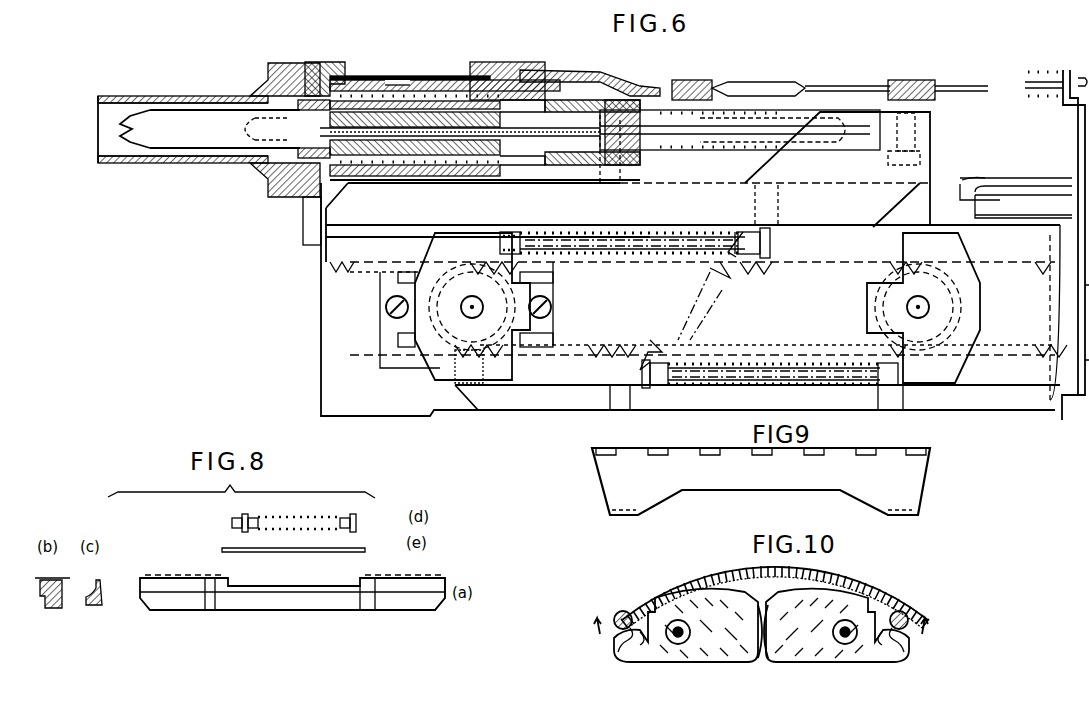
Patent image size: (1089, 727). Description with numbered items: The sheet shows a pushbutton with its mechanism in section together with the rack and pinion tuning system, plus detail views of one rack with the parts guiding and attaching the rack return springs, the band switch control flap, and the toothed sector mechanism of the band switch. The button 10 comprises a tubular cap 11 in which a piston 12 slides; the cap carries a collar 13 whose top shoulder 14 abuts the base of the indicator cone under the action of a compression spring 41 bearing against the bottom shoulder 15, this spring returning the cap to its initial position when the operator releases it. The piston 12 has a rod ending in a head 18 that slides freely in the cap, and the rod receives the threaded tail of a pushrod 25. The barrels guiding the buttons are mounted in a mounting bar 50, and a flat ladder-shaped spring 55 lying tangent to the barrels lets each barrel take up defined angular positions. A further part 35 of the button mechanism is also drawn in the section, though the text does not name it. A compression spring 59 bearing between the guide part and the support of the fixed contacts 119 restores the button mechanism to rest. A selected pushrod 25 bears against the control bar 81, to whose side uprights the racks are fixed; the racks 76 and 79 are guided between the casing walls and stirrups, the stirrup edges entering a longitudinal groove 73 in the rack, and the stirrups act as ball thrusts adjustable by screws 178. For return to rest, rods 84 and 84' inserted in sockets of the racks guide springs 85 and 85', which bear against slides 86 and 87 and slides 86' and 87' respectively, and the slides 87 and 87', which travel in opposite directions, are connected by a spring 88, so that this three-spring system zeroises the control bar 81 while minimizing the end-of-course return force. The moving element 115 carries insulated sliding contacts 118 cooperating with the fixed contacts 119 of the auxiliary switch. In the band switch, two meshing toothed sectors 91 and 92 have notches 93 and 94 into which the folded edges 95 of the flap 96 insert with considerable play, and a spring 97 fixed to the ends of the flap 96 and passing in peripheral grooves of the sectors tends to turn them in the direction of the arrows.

In FIG. 6, the button 10 is at (192, 104).
In FIG. 6, the tubular cap 11 is at (125, 163).
In FIG. 6, the piston 12 is at (190, 148).
In FIG. 6, the collar 13 is at (318, 80).
In FIG. 6, the top shoulder 14 is at (262, 176).
In FIG. 6, the bottom shoulder 15 is at (289, 190).
In FIG. 6, the head 18 is at (98, 132).
In FIG. 6, the pushrod 25 is at (790, 126).
In FIG. 6, the lever block 35 is at (556, 70).
In FIG. 6, the compression spring 41 is at (402, 162).
In FIG. 6, the mounting bar 50 is at (290, 66).
In FIG. 6, the spring 55 is at (398, 78).
In FIG. 6, the spring 59 is at (742, 112).
In FIG. 6, the rack 76 is at (832, 262).
In FIG. 6, the rack 79 is at (590, 356).
In FIG. 8, the rack 79 is at (400, 604).
In FIG. 6, the control bar 81 is at (934, 132).
In FIG. 6, the rod 84 is at (632, 224).
In FIG. 8, the rod 84 is at (280, 542).
In FIG. 6, the rod 84' is at (774, 354).
In FIG. 6, the spring 85 is at (630, 226).
In FIG. 8, the spring 85 is at (298, 510).
In FIG. 6, the spring 85' is at (774, 386).
In FIG. 6, the slide 86 is at (517, 227).
In FIG. 8, the slide 86 is at (352, 512).
In FIG. 6, the slide 86' is at (866, 385).
In FIG. 6, the slide 87 is at (749, 257).
In FIG. 8, the slide 87 is at (244, 512).
In FIG. 6, the slide 87' is at (654, 384).
In FIG. 6, the spring 88 is at (672, 322).
In FIG. 6, the moving element 115 is at (692, 80).
In FIG. 6, the sliding contacts 118 is at (772, 82).
In FIG. 6, the fixed contacts 119 is at (958, 86).
In FIG. 6, the screws 178 is at (386, 307).
In FIG. 8, the longitudinal groove 73 is at (199, 592).
In FIG. 10, the toothed sector 91 is at (633, 605).
In FIG. 10, the toothed sector 92 is at (890, 605).
In FIG. 10, the notch 93 is at (618, 640).
In FIG. 10, the notch 94 is at (910, 640).
In FIG. 9, the folded edges 95 is at (634, 516).
In FIG. 9, the flap 96 is at (790, 488).
In FIG. 9, the spring 97 is at (826, 449).
In FIG. 10, the spring 97 is at (746, 576).